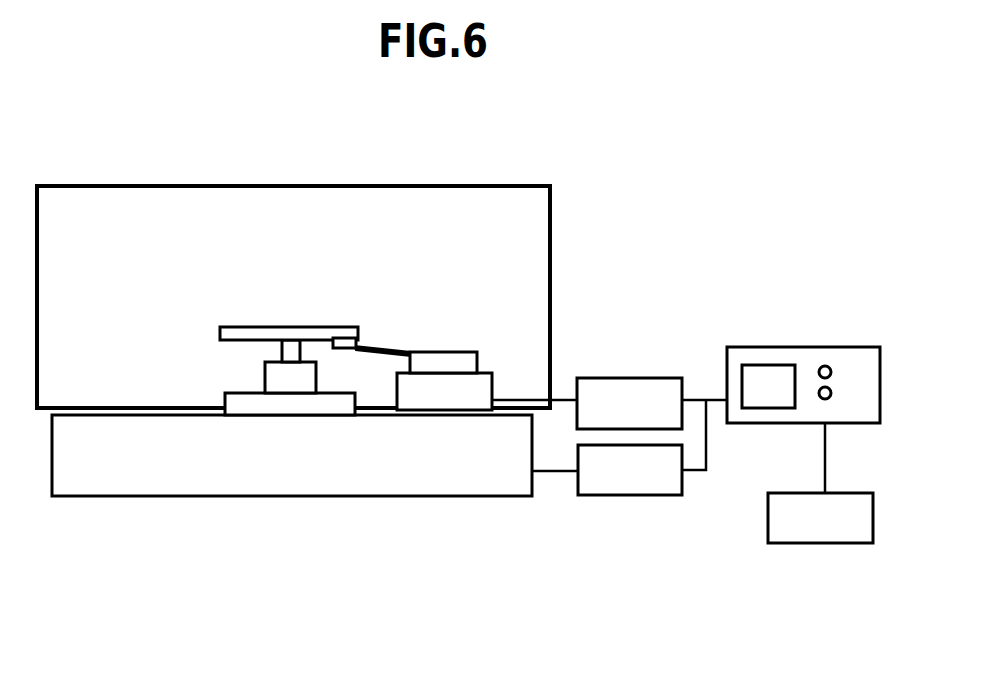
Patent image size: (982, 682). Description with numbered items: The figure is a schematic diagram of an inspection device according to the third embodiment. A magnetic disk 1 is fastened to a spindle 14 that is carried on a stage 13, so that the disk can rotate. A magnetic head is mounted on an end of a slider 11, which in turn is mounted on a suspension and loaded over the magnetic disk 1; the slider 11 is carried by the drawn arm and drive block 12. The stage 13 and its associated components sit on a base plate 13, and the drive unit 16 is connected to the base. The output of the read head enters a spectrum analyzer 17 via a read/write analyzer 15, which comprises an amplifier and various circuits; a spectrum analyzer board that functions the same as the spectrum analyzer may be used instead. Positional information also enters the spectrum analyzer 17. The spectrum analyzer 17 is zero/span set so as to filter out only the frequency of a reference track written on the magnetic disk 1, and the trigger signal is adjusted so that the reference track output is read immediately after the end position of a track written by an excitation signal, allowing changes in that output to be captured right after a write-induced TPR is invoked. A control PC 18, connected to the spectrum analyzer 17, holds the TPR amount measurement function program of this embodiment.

The magnetic disk 1 is at (237, 333).
The slider 11 is at (348, 340).
The probe arm / drive unit 12 is at (392, 345).
The stage 13 is at (88, 422).
The spindle 14 is at (282, 385).
The read/write analyzer 15 is at (606, 389).
The stage drive unit 16 is at (610, 483).
The spectrum analyzer 17 is at (757, 357).
The control PC 18 is at (775, 524).